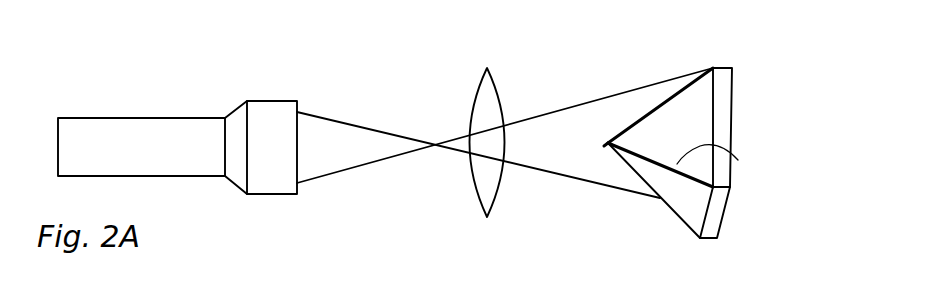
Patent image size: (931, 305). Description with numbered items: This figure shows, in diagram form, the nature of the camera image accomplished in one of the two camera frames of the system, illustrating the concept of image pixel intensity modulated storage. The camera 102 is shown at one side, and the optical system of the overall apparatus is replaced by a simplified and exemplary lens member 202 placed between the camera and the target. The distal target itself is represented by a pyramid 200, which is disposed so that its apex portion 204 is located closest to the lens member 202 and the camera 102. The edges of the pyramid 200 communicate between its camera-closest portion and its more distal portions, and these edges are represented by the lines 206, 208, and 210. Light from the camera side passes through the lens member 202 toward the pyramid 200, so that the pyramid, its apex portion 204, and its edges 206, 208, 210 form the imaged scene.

The camera 102 is at (132, 118).
The pyramid 200 is at (732, 90).
The lens member 202 is at (477, 88).
The apex portion 204 is at (608, 143).
The edge line of the pyramid 206 is at (657, 105).
The edge line of the pyramid 208 is at (738, 160).
The edge line of the pyramid 210 is at (680, 217).